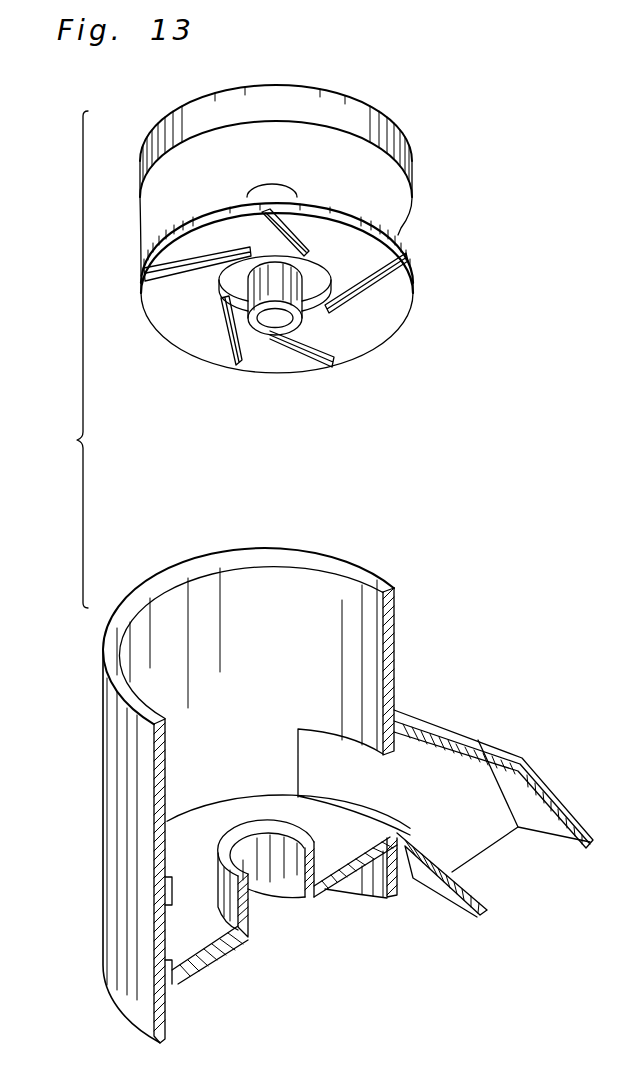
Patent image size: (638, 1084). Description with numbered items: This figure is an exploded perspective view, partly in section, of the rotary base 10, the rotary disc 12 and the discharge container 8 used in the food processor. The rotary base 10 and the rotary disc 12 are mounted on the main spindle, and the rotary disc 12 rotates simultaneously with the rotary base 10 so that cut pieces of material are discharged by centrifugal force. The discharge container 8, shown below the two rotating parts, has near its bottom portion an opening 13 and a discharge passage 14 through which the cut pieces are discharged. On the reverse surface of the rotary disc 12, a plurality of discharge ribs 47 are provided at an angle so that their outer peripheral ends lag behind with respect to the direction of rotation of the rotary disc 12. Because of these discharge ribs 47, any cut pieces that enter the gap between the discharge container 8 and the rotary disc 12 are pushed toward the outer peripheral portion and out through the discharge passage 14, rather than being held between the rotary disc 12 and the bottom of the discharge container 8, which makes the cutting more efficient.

The discharge container 8 is at (163, 653).
The rotary base 10 is at (355, 168).
The rotary disc 12 is at (336, 312).
The opening 13 is at (373, 780).
The discharge passage 14 is at (484, 818).
The discharge ribs 47 is at (340, 307).